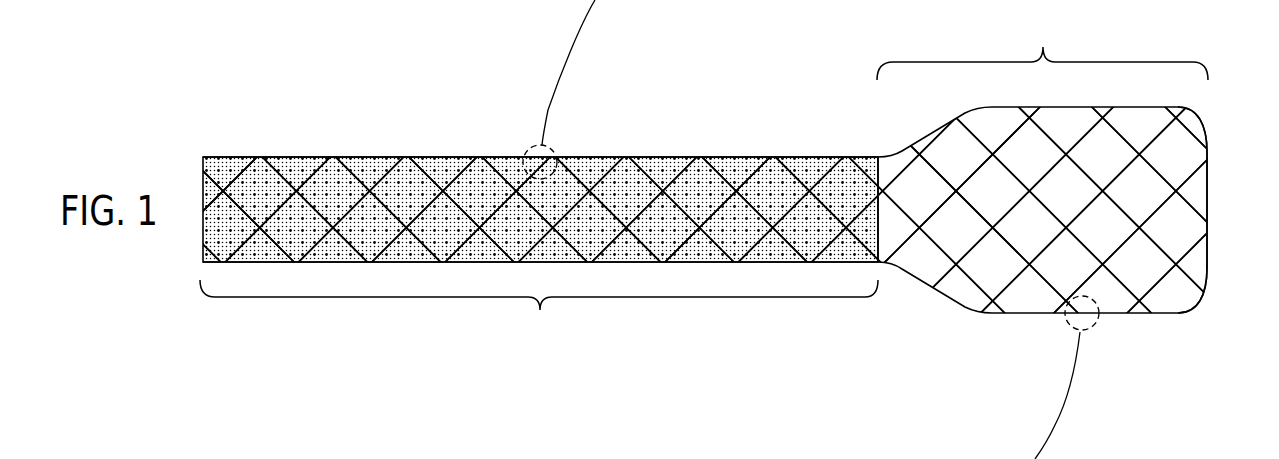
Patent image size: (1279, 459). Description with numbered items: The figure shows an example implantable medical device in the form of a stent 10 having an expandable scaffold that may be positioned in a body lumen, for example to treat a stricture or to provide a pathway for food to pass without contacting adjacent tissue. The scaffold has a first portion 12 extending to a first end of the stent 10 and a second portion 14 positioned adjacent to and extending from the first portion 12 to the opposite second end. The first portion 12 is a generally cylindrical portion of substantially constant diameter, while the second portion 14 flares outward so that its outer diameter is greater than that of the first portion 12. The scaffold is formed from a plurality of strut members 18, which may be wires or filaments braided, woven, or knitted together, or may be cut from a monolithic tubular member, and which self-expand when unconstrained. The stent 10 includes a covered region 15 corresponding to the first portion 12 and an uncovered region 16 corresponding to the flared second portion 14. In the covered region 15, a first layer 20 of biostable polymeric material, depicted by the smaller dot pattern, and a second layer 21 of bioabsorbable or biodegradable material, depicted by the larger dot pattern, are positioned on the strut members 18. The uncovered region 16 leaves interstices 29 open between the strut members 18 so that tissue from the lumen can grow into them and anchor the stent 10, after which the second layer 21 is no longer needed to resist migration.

The stent 10 is at (368, 108).
The first portion 12 is at (261, 115).
The second portion 14 is at (1166, 341).
The covered region 15 is at (539, 310).
The uncovered region 16 is at (1042, 49).
The strut members 18 is at (712, 165).
The first layer 20 is at (223, 243).
The second layer 21 is at (472, 246).
The interstices 29 is at (1175, 228).